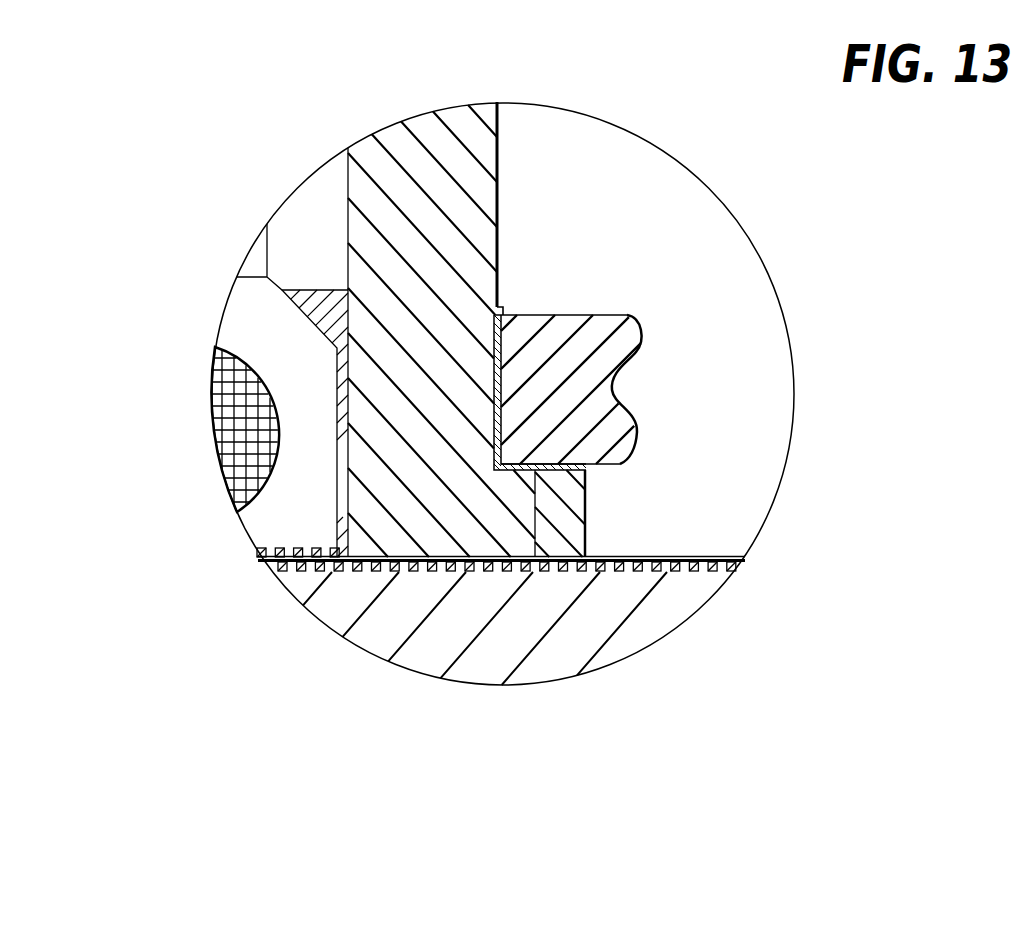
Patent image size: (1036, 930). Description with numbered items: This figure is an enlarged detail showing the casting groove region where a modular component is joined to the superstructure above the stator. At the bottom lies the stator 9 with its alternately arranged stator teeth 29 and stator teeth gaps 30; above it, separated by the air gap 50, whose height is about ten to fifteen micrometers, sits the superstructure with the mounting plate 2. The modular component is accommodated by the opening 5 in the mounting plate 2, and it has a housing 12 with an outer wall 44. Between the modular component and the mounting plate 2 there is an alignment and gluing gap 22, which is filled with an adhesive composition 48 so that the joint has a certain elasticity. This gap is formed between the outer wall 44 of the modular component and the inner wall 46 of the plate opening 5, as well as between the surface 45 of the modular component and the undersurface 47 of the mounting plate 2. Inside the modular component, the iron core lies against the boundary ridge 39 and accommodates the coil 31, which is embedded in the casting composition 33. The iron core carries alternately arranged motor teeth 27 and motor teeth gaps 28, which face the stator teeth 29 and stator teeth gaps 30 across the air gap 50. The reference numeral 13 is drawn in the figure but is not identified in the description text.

The mounting plate 2 is at (537, 330).
The opening 5 is at (625, 375).
The stator 9 is at (652, 622).
The housing 12 is at (430, 140).
The support block 13 is at (572, 513).
The alignment and gluing gap 22 is at (503, 462).
The motor teeth 27 is at (305, 553).
The motor teeth gaps 28 is at (278, 553).
The stator teeth 29 is at (333, 572).
The stator teeth gaps 30 is at (322, 570).
The coil 31 is at (239, 372).
The casting composition 33 is at (337, 290).
The boundary ridge 39 is at (393, 573).
The outer wall 44 is at (498, 305).
The surface 45 is at (540, 572).
The inner wall 46 is at (623, 315).
The undersurface 47 is at (623, 467).
The adhesive composition 48 is at (503, 308).
The air gap 50 is at (273, 567).